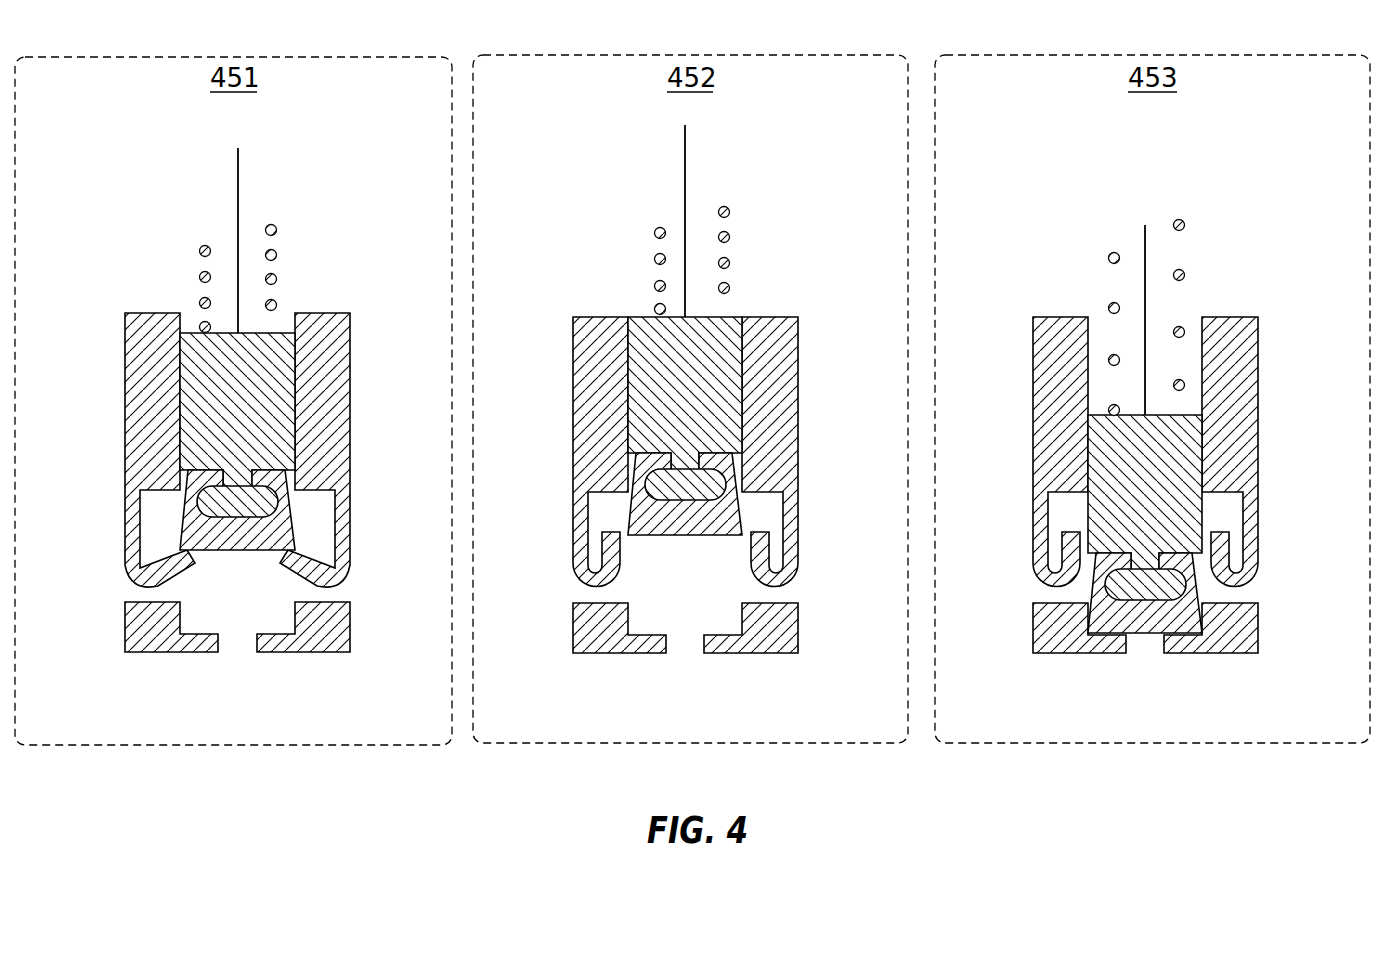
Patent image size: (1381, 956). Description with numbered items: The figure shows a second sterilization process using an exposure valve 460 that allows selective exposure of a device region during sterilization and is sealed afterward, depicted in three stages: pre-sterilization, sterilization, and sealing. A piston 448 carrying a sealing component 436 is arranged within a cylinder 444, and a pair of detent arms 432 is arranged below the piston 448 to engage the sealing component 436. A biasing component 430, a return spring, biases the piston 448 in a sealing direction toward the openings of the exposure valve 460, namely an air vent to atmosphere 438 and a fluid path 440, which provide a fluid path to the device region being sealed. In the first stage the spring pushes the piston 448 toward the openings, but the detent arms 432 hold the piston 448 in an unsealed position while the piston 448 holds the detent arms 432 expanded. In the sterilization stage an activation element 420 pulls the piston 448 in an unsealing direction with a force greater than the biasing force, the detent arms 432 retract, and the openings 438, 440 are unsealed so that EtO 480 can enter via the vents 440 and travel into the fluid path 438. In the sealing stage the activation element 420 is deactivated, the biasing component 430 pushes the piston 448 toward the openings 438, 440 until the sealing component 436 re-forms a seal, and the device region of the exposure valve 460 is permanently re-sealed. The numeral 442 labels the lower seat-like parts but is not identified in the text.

The activation element 420 is at (245, 187).
The biasing component 430 is at (195, 277).
The detent arms 432 is at (165, 555).
The sealing component 436 is at (299, 522).
The air vent to atmosphere 438 is at (239, 645).
The fluid path 440 is at (158, 593).
The seat 442 is at (142, 655).
The cylinder 444 is at (353, 388).
The piston 448 is at (178, 386).
The exposure valve 460 is at (326, 201).
The EtO 480 is at (755, 597).